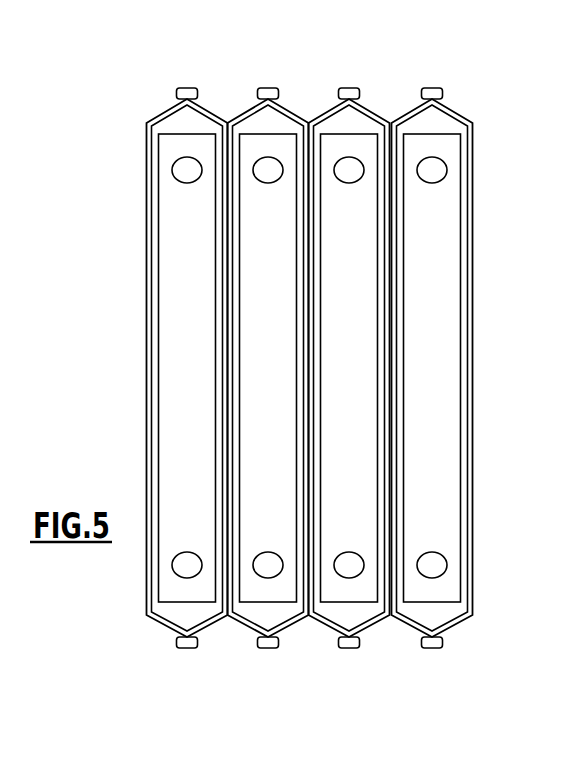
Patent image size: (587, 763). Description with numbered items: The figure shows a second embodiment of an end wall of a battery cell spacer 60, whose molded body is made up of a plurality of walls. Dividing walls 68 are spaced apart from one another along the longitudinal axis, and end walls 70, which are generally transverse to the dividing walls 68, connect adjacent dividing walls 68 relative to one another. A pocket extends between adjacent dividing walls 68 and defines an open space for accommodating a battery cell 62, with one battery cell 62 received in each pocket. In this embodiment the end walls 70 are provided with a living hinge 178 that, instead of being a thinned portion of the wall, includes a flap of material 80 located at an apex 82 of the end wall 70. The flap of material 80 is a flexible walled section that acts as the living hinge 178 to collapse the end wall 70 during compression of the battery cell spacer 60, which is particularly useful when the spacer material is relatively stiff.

The battery cell spacer 60 is at (483, 217).
The battery cell 62 is at (440, 331).
The dividing walls 68 is at (228, 317).
The end walls 70 is at (208, 111).
The flap of material 80 is at (178, 89).
The apex 82 is at (180, 118).
The living hinge 178 is at (430, 715).